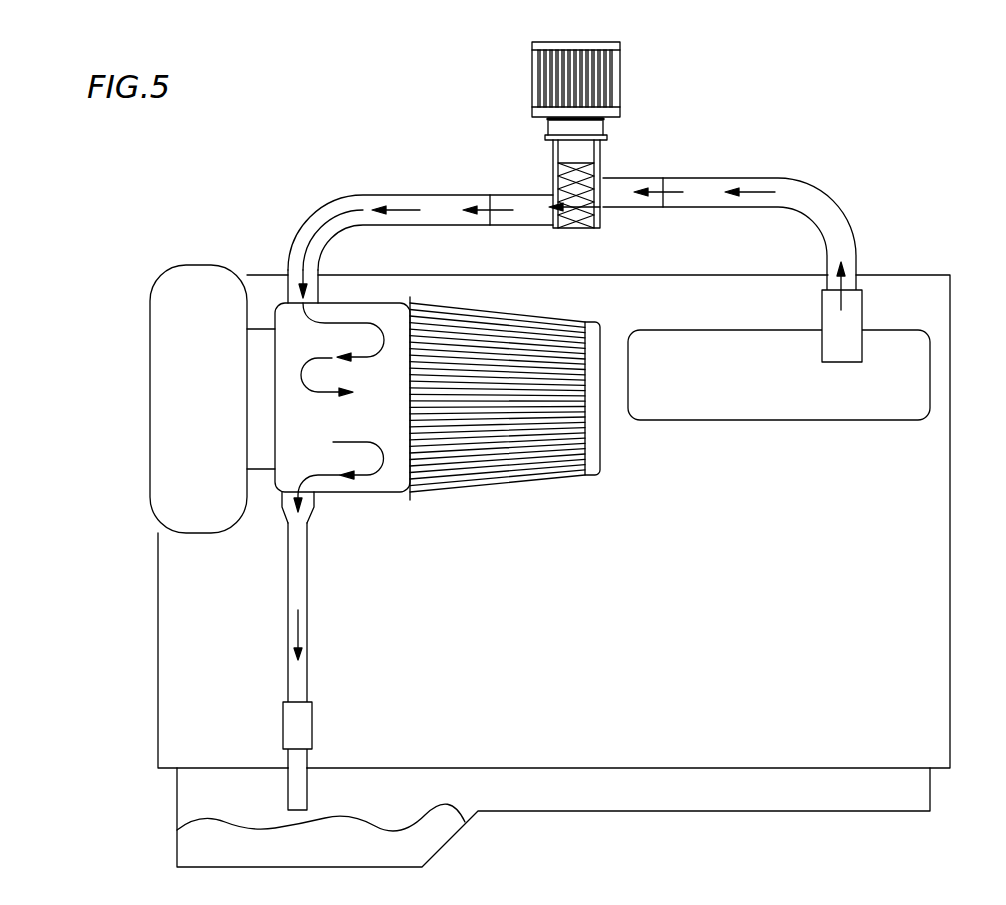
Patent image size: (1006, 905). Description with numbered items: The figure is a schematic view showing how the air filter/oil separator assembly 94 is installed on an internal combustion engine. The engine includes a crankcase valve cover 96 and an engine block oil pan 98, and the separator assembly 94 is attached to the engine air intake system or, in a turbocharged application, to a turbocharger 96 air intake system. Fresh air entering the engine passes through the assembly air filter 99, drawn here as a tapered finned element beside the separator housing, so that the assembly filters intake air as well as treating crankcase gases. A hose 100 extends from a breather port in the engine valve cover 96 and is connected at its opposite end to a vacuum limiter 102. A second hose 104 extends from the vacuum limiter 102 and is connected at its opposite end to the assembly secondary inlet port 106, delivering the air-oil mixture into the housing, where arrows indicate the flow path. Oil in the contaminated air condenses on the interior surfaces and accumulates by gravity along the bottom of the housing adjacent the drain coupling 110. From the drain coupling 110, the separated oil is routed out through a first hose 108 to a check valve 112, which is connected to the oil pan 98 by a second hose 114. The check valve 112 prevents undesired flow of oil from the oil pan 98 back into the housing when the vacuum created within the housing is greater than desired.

The air filter/oil separator assembly 94 is at (389, 513).
The crankcase valve cover 96 is at (200, 263).
The engine block oil pan 98 is at (582, 805).
The air filter 99 is at (523, 463).
The hose 100 is at (829, 199).
The vacuum limiter 102 is at (613, 183).
The second hose 104 is at (362, 168).
The secondary inlet port 106 is at (300, 243).
The first hose 108 is at (307, 583).
The drain coupling 110 is at (285, 513).
The check valve 112 is at (312, 720).
The second hose 114 is at (307, 788).